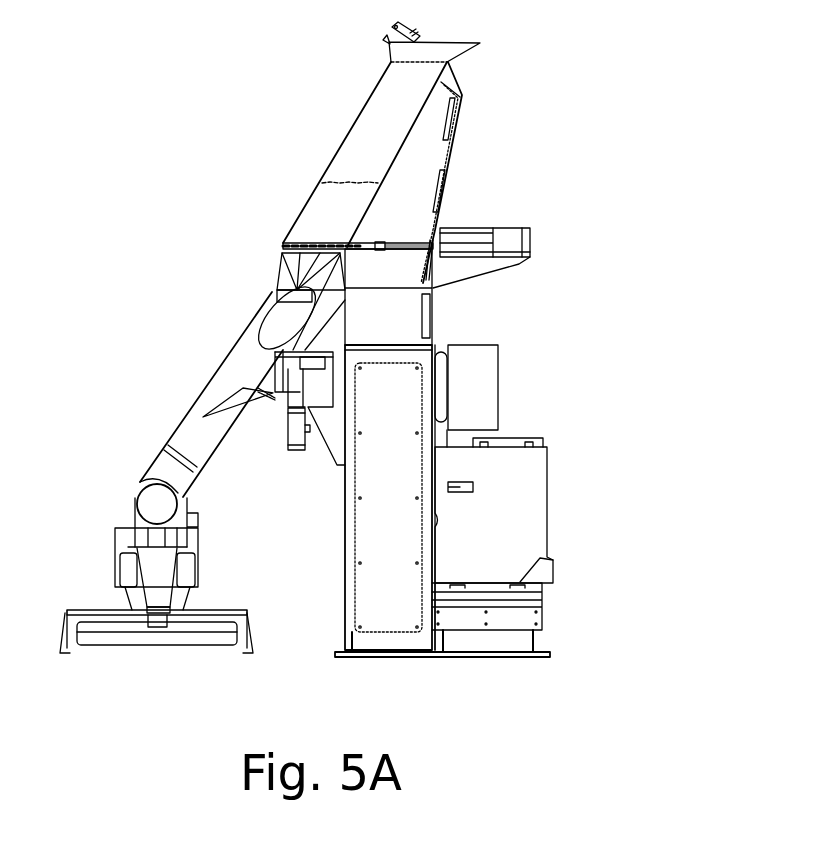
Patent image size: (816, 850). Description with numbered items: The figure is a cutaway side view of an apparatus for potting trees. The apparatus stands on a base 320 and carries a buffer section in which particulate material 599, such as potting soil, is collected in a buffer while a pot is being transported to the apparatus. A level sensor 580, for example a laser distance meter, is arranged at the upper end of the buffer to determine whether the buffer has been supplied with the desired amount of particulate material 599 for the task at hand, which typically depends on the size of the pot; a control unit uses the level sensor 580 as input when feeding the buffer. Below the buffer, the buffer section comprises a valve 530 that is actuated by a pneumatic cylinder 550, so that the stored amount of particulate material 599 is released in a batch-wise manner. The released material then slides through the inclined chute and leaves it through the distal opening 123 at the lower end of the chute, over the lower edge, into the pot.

The particulate material 599 is at (347, 183).
The level sensor 580 is at (447, 63).
The pneumatic cylinder 550 is at (467, 248).
The valve 530 is at (310, 240).
The distal opening 123 is at (158, 510).
The base 320 is at (495, 665).